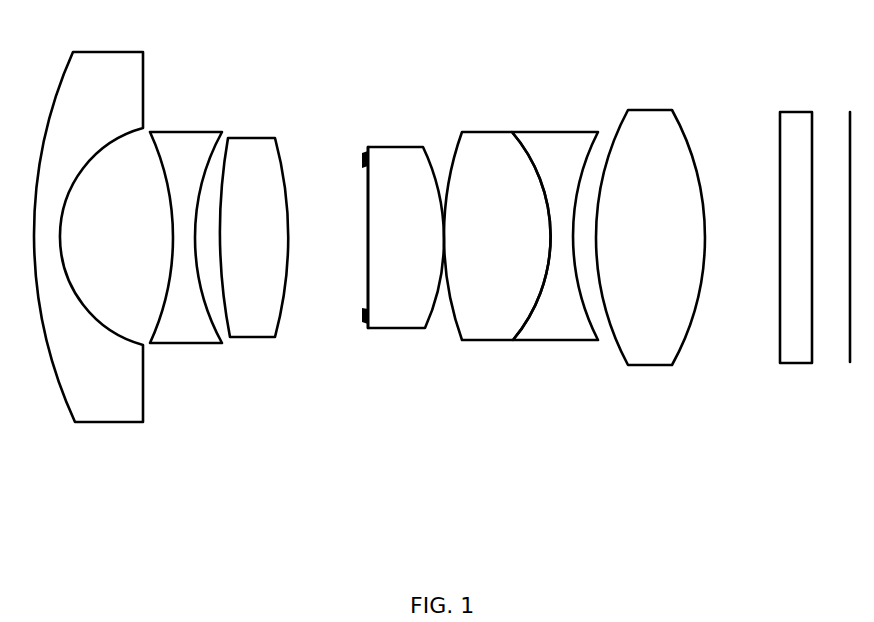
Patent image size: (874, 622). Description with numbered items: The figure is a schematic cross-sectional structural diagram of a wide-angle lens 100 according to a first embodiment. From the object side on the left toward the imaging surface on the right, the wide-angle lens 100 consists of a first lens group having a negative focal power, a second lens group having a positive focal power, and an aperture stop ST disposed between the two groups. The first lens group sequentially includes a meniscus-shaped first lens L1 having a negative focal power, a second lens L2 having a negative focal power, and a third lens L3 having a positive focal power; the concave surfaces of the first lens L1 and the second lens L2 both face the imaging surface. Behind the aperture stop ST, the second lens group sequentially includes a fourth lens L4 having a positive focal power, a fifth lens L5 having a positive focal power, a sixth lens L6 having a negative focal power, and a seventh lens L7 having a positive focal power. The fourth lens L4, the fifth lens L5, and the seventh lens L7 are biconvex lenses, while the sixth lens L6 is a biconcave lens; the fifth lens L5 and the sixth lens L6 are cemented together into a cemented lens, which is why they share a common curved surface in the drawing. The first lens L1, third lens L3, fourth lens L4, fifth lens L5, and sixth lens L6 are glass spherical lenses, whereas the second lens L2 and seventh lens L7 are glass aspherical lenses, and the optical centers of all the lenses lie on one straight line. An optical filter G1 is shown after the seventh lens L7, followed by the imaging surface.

The wide-angle lens 100 is at (437, 53).
The first lens L1 is at (107, 395).
The second lens L2 is at (187, 328).
The third lens L3 is at (250, 317).
The aperture stop ST is at (357, 323).
The fourth lens L4 is at (393, 305).
The fifth lens L5 is at (497, 307).
The sixth lens L6 is at (567, 312).
The seventh lens L7 is at (667, 293).
The optical filter G1 is at (795, 307).